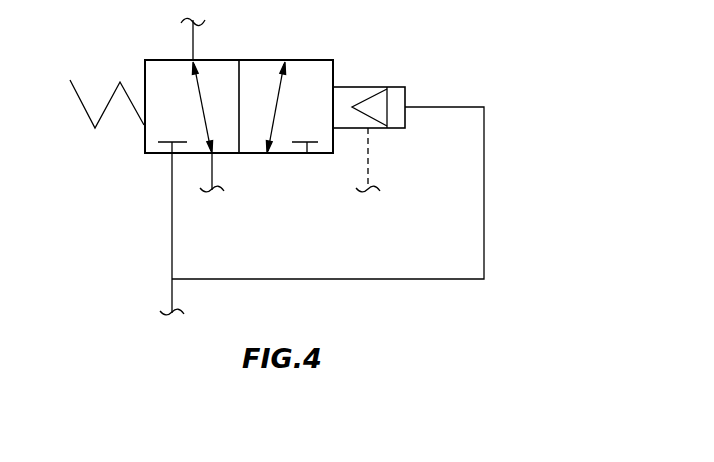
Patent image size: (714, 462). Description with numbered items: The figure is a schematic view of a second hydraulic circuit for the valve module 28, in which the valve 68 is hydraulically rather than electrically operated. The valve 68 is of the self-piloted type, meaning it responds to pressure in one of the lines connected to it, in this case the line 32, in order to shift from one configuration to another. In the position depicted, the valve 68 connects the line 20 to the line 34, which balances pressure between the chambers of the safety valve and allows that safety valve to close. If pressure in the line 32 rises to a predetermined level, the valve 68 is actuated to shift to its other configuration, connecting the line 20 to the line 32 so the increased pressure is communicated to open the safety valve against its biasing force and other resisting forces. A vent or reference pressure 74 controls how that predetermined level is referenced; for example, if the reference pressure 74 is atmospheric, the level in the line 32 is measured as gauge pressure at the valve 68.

The line 20 is at (192, 42).
The valve 68 is at (335, 72).
The valve module 28 is at (490, 77).
The vent or reference pressure 74 is at (370, 152).
The line 34 is at (213, 169).
The line 32 is at (170, 295).